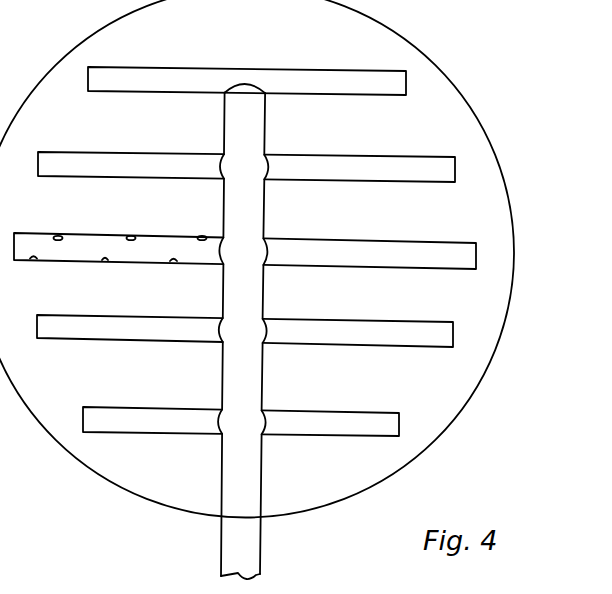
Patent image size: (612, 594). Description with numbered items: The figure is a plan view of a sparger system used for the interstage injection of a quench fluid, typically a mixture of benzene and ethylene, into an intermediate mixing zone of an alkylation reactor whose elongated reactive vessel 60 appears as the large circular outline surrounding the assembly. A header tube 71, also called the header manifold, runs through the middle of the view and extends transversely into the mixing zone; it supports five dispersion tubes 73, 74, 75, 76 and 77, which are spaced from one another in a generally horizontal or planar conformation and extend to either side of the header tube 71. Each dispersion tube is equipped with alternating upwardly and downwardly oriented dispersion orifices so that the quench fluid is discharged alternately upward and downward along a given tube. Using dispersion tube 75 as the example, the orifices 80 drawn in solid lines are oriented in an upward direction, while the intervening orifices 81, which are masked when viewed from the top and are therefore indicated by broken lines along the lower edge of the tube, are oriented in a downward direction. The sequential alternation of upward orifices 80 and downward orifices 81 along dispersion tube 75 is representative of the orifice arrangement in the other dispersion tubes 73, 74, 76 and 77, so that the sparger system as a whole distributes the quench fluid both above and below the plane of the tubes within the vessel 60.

The reactive vessel 60 is at (470, 99).
The header tube 71 is at (260, 551).
The dispersion tube 73 is at (368, 437).
The dispersion tube 74 is at (418, 348).
The dispersion tube 75 is at (358, 270).
The dispersion tube 76 is at (385, 183).
The dispersion tube 77 is at (348, 96).
The upwardly oriented orifices 80 is at (60, 236).
The downwardly oriented orifices 81 is at (107, 261).